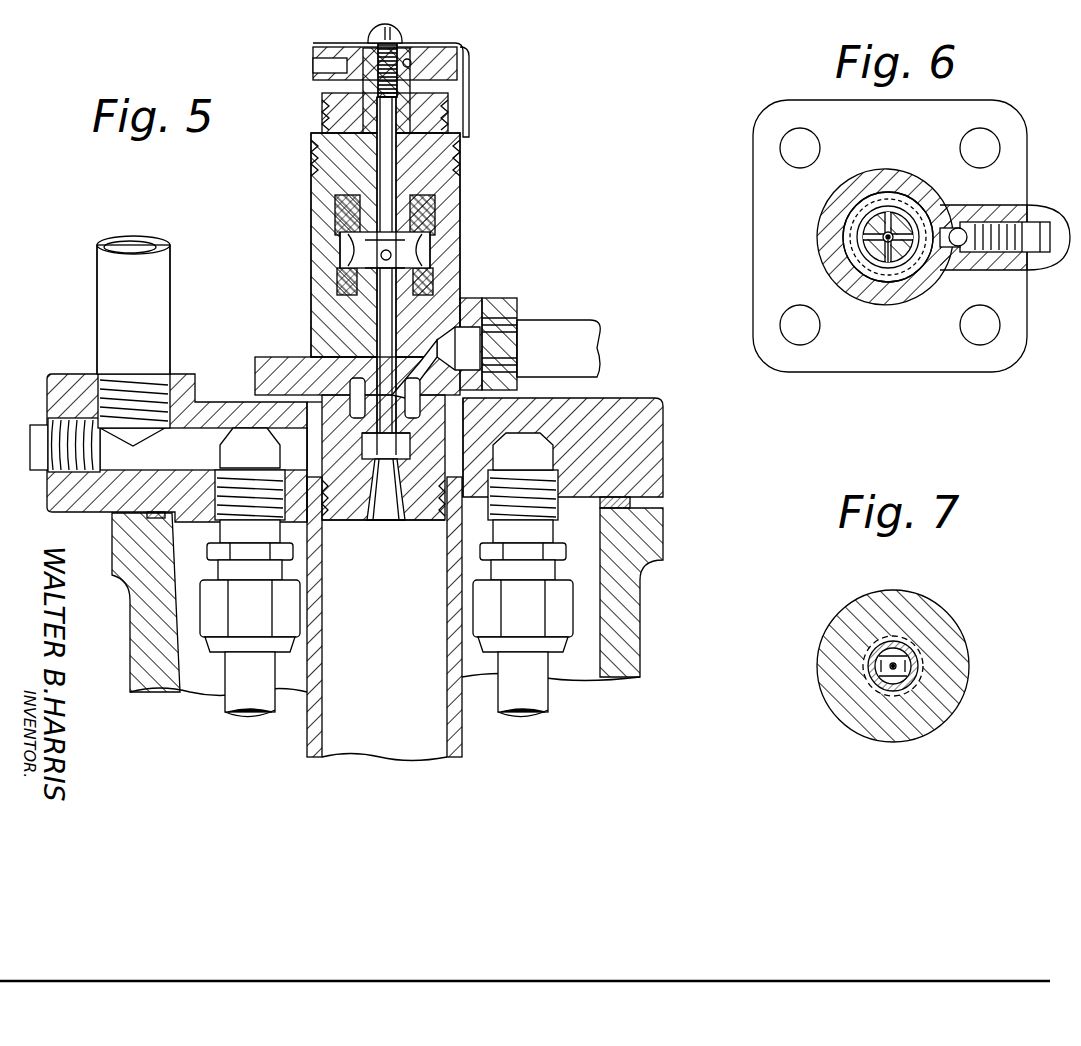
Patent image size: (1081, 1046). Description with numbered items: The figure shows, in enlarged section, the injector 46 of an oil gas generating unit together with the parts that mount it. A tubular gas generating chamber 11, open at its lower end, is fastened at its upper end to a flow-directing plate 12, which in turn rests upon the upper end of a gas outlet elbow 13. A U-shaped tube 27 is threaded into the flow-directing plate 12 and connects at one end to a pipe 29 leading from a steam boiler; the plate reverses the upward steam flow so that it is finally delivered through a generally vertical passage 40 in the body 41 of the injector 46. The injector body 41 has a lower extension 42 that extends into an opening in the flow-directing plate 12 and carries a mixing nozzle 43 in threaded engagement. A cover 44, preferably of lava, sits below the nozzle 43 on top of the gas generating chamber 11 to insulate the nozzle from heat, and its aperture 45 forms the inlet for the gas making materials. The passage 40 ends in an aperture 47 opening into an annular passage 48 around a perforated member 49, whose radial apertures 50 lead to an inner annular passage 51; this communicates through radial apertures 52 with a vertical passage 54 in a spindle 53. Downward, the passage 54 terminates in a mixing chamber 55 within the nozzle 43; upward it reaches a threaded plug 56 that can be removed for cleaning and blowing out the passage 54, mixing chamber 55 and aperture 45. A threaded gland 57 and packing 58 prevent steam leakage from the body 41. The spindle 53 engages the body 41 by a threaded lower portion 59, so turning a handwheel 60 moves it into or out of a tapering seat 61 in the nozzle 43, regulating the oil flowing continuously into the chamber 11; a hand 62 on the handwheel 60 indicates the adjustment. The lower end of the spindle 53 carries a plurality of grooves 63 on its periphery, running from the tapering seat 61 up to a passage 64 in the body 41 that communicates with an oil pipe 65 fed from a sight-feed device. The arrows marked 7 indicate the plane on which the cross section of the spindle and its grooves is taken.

In FIG. 5, the clearance gap 7 is at (283, 415).
In FIG. 5, the tubular gas generating chamber 11 is at (435, 737).
In FIG. 5, the flow-directing plate 12 is at (665, 432).
In FIG. 5, the gas outlet elbow 13 is at (665, 533).
In FIG. 5, the U-shaped tube 27 is at (250, 680).
In FIG. 5, the pipe 29 is at (120, 290).
In FIG. 6, the vertical passage 40 is at (978, 250).
In FIG. 5, the injector body 41 is at (453, 170).
In FIG. 6, the injector body 41 is at (862, 207).
In FIG. 5, the lower extension 42 is at (335, 420).
In FIG. 7, the lower extension 42 is at (969, 663).
In FIG. 5, the mixing nozzle 43 is at (338, 418).
In FIG. 7, the mixing nozzle 43 is at (915, 675).
In FIG. 5, the cover 44 is at (342, 518).
In FIG. 5, the aperture 45 is at (375, 512).
In FIG. 5, the injector 46 is at (528, 193).
In FIG. 6, the aperture 47 is at (945, 248).
In FIG. 5, the annular passage 48 is at (428, 246).
In FIG. 6, the annular passage 48 is at (848, 215).
In FIG. 6, the perforated member 49 is at (828, 210).
In FIG. 5, the radial apertures 50 is at (432, 243).
In FIG. 6, the radial apertures 50 is at (858, 238).
In FIG. 5, the annular passage 51 is at (432, 253).
In FIG. 6, the annular passage 51 is at (862, 250).
In FIG. 5, the radial apertures 52 is at (378, 256).
In FIG. 6, the radial apertures 52 is at (890, 262).
In FIG. 5, the spindle 53 is at (374, 92).
In FIG. 6, the spindle 53 is at (900, 222).
In FIG. 7, the spindle 53 is at (905, 685).
In FIG. 5, the vertical passage 54 is at (378, 286).
In FIG. 6, the vertical passage 54 is at (888, 235).
In FIG. 7, the vertical passage 54 is at (885, 690).
In FIG. 5, the mixing chamber 55 is at (384, 488).
In FIG. 5, the threaded plug 56 is at (402, 30).
In FIG. 5, the threaded gland 57 is at (324, 105).
In FIG. 5, the packing 58 is at (335, 207).
In FIG. 5, the threaded lower portion 59 is at (405, 335).
In FIG. 5, the handwheel 60 is at (322, 65).
In FIG. 5, the tapering seat 61 is at (399, 459).
In FIG. 5, the hand 62 is at (472, 85).
In FIG. 5, the grooves 63 is at (385, 397).
In FIG. 7, the grooves 63 is at (880, 665).
In FIG. 5, the passage 64 is at (430, 370).
In FIG. 5, the oil pipe 65 is at (558, 348).